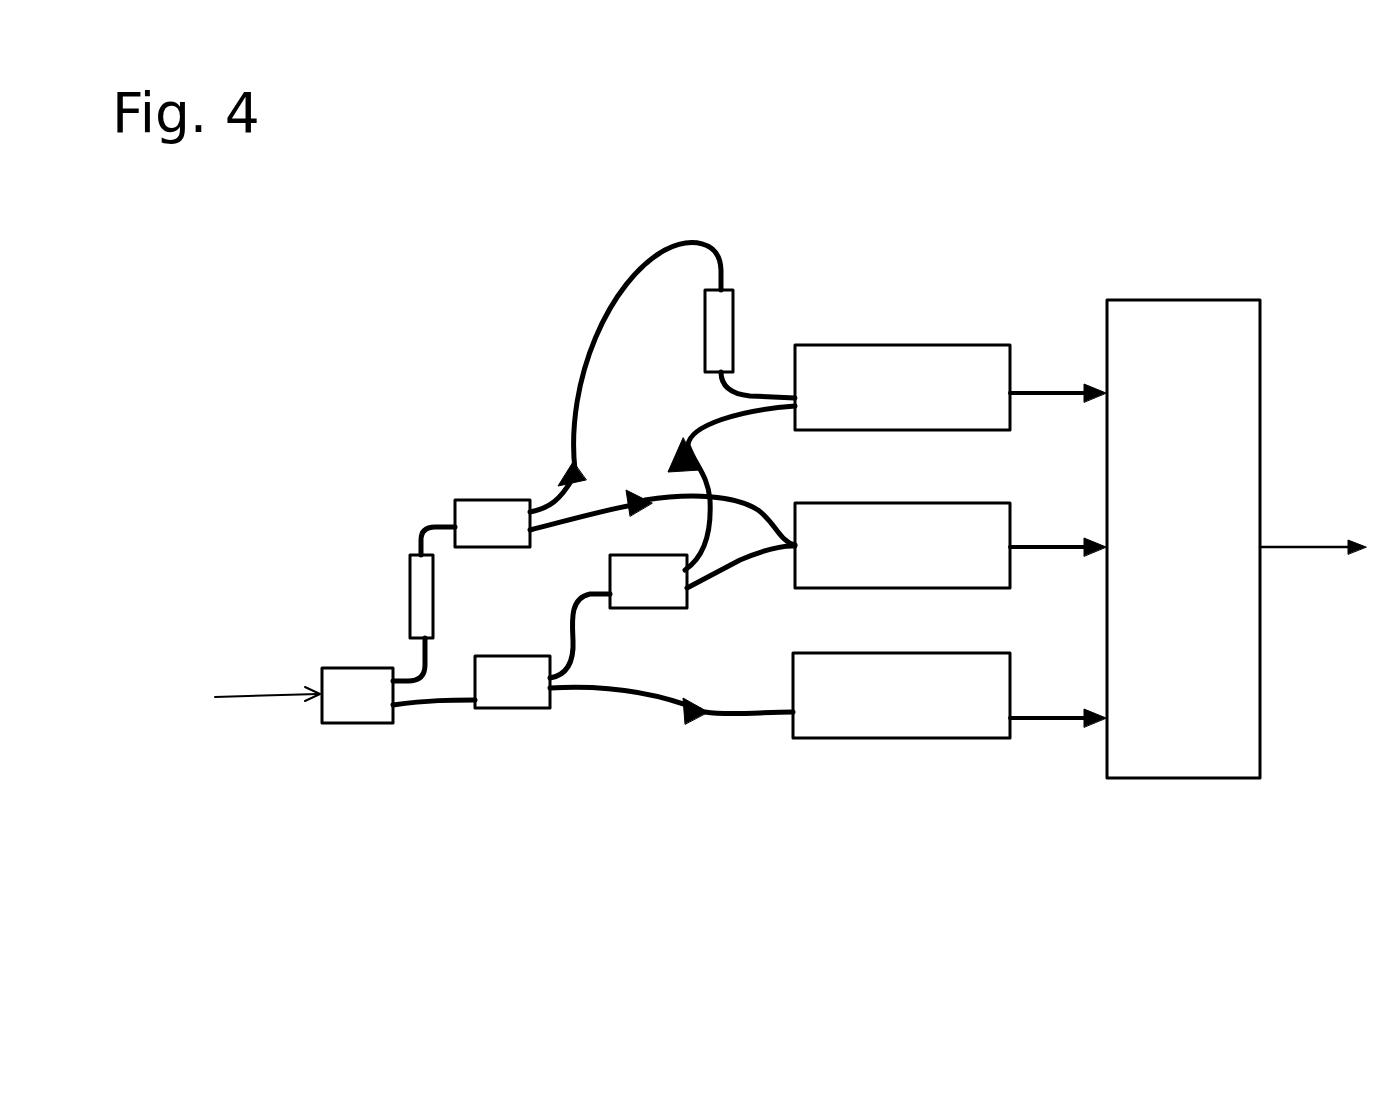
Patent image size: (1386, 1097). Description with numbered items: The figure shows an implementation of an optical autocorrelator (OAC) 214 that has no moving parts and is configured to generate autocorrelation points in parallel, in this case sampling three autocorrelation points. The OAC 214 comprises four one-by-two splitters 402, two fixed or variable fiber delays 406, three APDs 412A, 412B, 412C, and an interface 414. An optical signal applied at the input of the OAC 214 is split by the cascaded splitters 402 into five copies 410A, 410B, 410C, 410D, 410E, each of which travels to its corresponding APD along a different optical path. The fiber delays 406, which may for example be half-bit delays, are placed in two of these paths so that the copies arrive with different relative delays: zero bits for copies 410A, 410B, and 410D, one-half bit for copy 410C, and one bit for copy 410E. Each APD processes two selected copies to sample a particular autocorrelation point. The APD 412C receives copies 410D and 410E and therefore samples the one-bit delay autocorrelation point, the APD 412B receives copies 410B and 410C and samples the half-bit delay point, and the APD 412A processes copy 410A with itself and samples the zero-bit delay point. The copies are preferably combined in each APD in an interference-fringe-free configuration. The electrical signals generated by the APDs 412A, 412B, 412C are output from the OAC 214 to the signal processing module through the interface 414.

The optical autocorrelator 214 is at (122, 903).
The 1×2 splitter 402 is at (487, 500).
The fiber delay 406 is at (412, 553).
The copy 410A is at (752, 722).
The copy 410B is at (752, 570).
The copy 410C is at (758, 497).
The copy 410D is at (690, 420).
The copy 410E is at (752, 380).
The APD 412A is at (962, 657).
The APD 412B is at (962, 505).
The APD 412C is at (978, 343).
The interface 414 is at (1258, 298).